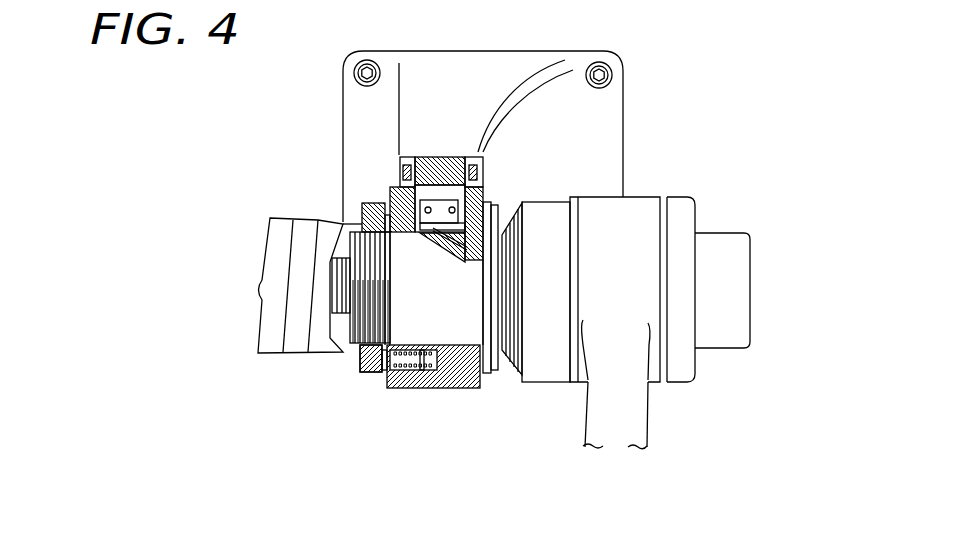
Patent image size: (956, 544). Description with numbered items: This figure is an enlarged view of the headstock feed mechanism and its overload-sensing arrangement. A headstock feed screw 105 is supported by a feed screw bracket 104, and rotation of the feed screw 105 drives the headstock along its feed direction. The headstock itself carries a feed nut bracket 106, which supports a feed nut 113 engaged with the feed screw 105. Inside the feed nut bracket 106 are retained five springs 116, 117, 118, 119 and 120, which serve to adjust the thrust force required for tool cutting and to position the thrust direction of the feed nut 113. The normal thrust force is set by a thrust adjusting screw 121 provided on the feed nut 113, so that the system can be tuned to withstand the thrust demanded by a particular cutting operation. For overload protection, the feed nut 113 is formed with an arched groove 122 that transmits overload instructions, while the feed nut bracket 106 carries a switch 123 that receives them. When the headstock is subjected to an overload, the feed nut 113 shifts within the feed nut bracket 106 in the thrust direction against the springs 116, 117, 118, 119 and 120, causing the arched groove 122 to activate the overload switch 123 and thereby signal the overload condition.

The feed screw bracket 104 is at (642, 208).
The headstock feed screw 105 is at (332, 266).
The feed nut bracket 106 is at (434, 68).
The feed nut 113 is at (492, 373).
The spring 116 is at (392, 388).
The spring 117 is at (413, 353).
The spring 118 is at (413, 365).
The spring 119 is at (422, 360).
The spring 120 is at (384, 360).
The thrust adjusting screw 121 is at (358, 372).
The arched groove 122 is at (455, 240).
The switch 123 is at (443, 200).